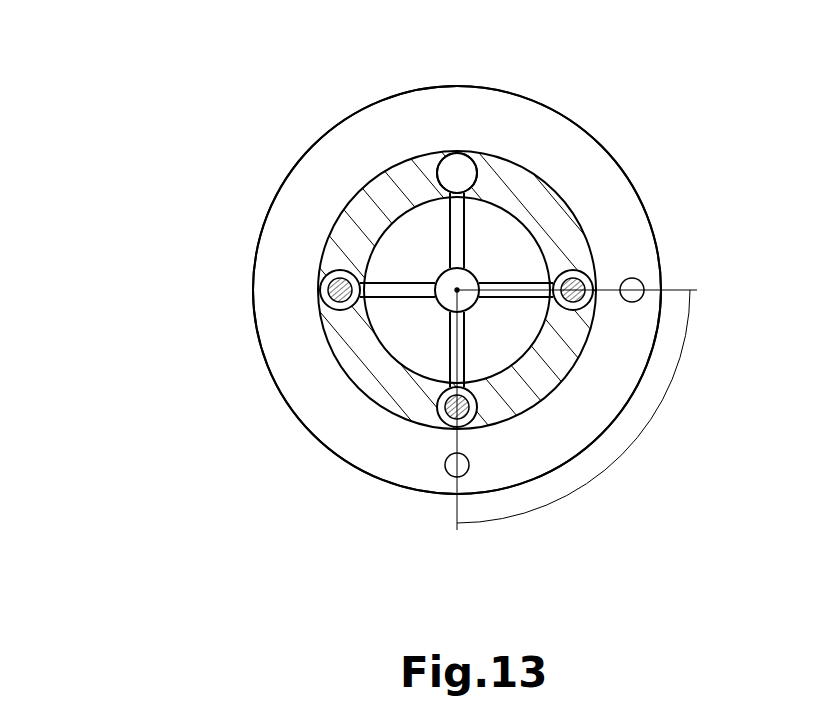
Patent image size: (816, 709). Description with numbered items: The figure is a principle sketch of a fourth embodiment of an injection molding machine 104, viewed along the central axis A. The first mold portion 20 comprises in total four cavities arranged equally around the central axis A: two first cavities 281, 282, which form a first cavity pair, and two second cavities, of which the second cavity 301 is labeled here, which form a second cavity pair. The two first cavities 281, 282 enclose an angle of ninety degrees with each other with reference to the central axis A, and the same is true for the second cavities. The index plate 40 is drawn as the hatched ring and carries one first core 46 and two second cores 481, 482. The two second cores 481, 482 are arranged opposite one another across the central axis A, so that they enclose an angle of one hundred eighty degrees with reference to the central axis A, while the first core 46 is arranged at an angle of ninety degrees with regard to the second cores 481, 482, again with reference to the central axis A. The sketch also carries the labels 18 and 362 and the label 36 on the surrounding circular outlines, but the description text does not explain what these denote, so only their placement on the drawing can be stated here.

The injection molding machine 104 is at (117, 70).
The outer housing body 362 is at (583, 128).
The housing ring 36 is at (595, 288).
The index plate 40 is at (395, 190).
The central axis A is at (457, 290).
The bore 18 is at (458, 152).
The first mold portion 20 is at (536, 125).
The second core 481 is at (330, 273).
The second cavity 301 is at (340, 313).
The first cavity 281 is at (582, 283).
The second core 482 is at (580, 297).
The first cavity 282 is at (438, 408).
The first core 46 is at (472, 400).